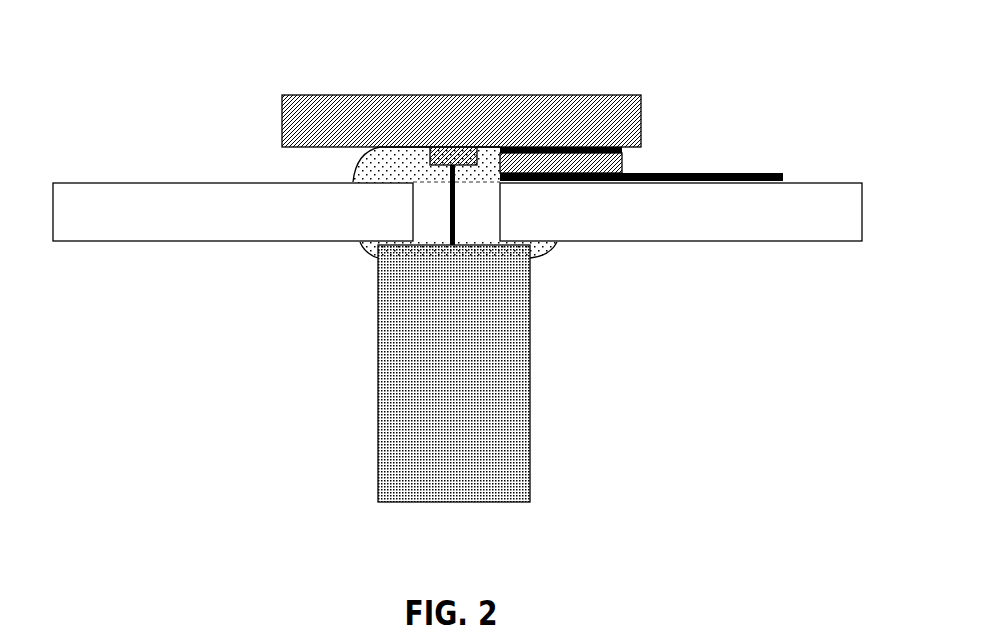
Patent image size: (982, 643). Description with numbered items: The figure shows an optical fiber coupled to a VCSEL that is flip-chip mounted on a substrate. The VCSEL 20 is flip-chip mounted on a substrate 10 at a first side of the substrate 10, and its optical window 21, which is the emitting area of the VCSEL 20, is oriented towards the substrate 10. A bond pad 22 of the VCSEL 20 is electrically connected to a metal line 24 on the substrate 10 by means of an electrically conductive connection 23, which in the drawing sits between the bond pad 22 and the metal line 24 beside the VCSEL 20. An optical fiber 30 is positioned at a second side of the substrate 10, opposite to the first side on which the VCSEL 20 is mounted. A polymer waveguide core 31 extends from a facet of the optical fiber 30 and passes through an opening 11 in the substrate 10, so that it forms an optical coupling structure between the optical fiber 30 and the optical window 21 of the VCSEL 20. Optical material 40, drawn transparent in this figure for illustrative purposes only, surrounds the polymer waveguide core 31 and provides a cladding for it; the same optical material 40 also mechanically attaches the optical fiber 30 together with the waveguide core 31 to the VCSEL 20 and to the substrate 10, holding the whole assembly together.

The substrate 10 is at (457, 212).
The opening 11 is at (477, 214).
The VCSEL 20 is at (453, 115).
The optical window 21 is at (450, 153).
The bond pad 22 is at (622, 151).
The electrically conductive connection 23 is at (622, 165).
The metal line 24 is at (783, 172).
The optical fiber 30 is at (413, 418).
The polymer waveguide core 31 is at (448, 232).
The optical material 40 is at (385, 165).